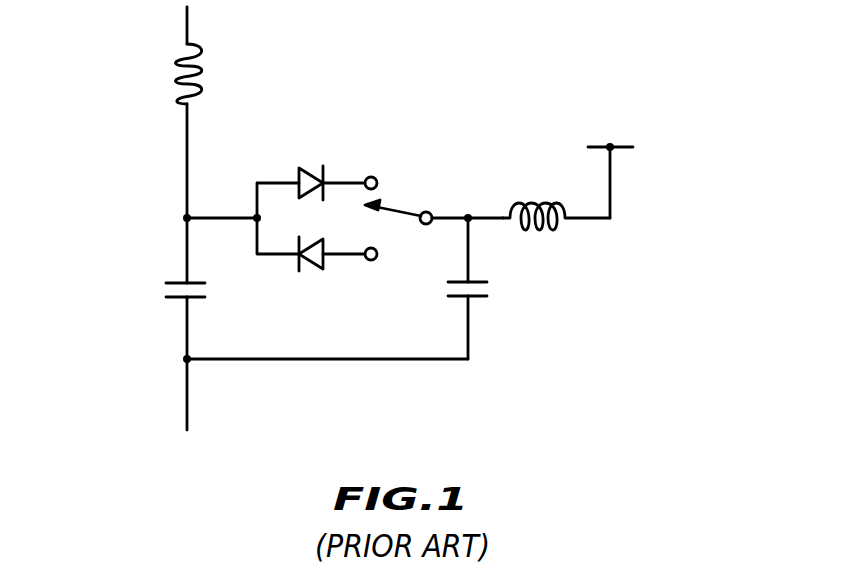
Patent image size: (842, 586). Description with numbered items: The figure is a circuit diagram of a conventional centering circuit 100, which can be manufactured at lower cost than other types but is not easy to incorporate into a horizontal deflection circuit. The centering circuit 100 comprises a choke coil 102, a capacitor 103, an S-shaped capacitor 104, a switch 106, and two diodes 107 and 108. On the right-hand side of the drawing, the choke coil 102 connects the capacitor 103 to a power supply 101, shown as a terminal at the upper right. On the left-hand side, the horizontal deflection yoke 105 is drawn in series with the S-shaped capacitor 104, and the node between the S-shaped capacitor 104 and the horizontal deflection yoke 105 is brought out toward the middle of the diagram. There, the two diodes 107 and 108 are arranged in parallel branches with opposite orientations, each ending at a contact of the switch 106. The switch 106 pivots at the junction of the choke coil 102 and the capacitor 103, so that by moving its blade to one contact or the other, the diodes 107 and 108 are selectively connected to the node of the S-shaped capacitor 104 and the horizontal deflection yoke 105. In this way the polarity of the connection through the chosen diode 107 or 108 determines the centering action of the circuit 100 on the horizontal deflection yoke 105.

The centering circuit 100 is at (470, 42).
The power supply 101 is at (620, 142).
The choke coil 102 is at (535, 200).
The capacitor 103 is at (492, 284).
The S-shaped capacitor 104 is at (163, 290).
The horizontal deflection yoke 105 is at (168, 70).
The switch 106 is at (426, 211).
The diode 107 is at (308, 168).
The diode 108 is at (310, 268).